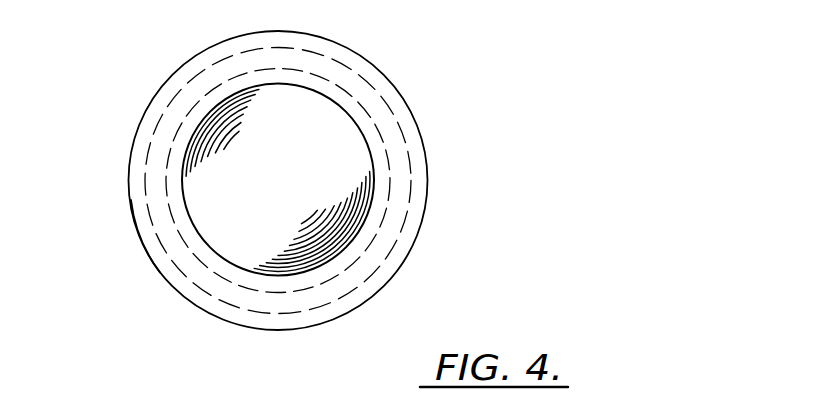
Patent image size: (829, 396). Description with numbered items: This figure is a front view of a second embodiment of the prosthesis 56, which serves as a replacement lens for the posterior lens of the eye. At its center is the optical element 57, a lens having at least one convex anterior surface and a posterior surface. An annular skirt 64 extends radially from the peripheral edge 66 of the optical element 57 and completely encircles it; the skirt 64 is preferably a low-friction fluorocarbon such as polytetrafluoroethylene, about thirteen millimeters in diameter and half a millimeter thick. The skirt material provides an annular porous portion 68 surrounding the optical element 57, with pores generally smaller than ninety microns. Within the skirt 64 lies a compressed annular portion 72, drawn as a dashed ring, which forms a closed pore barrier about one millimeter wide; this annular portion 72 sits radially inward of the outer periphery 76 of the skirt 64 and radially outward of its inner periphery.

The prosthesis 56 is at (414, 64).
The optical element 57 is at (278, 180).
The annular skirt 64 is at (396, 151).
The peripheral edge 66 is at (240, 274).
The annular porous portion 68 is at (340, 264).
The annular portion 72 is at (300, 303).
The outer periphery 76 is at (158, 273).